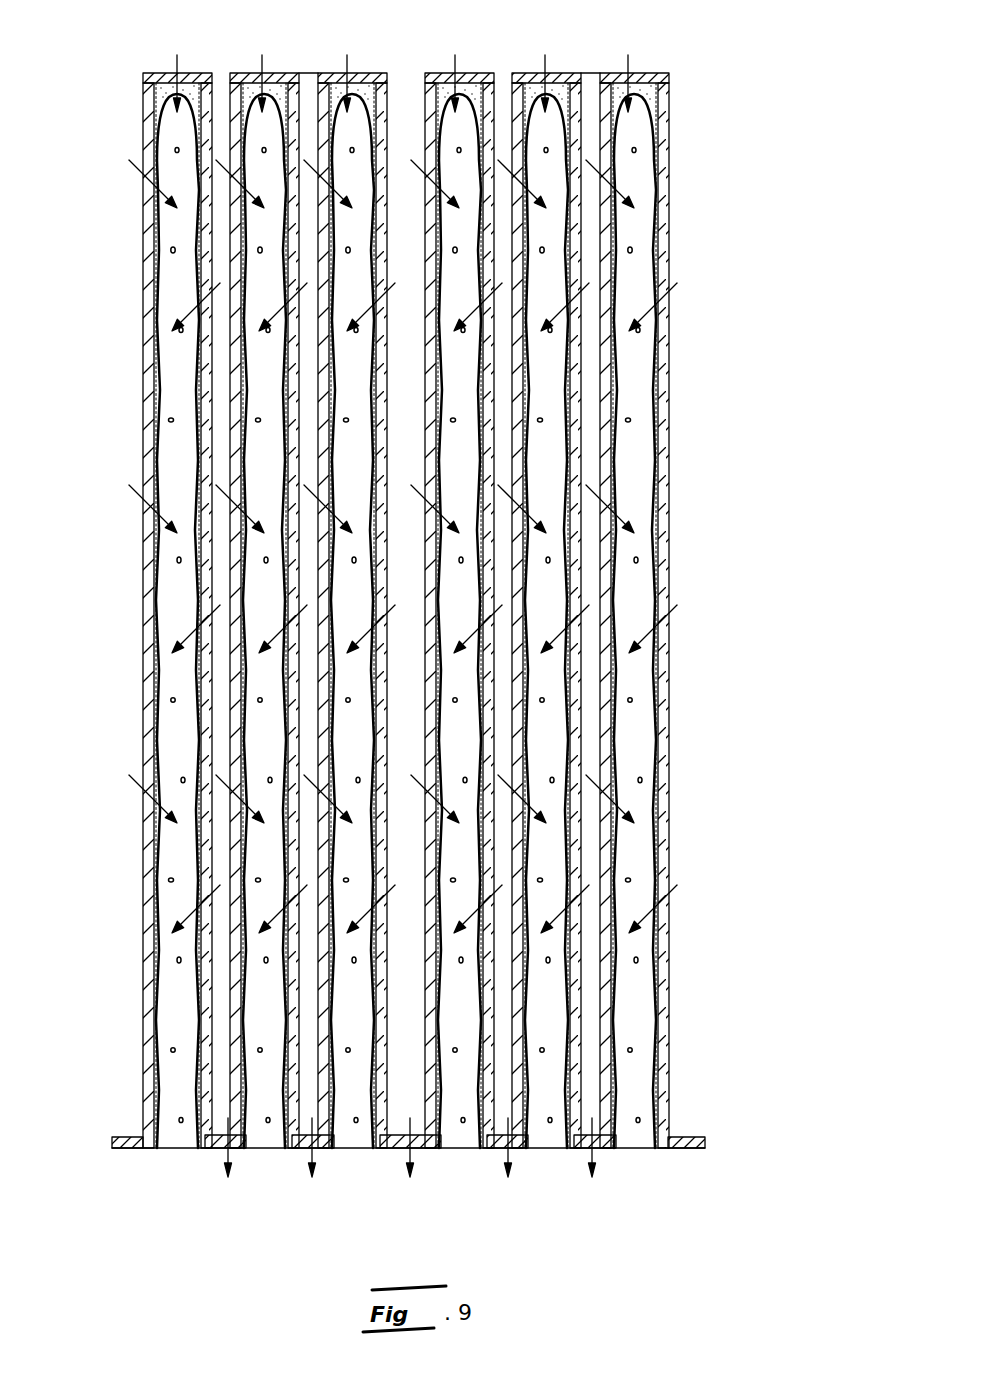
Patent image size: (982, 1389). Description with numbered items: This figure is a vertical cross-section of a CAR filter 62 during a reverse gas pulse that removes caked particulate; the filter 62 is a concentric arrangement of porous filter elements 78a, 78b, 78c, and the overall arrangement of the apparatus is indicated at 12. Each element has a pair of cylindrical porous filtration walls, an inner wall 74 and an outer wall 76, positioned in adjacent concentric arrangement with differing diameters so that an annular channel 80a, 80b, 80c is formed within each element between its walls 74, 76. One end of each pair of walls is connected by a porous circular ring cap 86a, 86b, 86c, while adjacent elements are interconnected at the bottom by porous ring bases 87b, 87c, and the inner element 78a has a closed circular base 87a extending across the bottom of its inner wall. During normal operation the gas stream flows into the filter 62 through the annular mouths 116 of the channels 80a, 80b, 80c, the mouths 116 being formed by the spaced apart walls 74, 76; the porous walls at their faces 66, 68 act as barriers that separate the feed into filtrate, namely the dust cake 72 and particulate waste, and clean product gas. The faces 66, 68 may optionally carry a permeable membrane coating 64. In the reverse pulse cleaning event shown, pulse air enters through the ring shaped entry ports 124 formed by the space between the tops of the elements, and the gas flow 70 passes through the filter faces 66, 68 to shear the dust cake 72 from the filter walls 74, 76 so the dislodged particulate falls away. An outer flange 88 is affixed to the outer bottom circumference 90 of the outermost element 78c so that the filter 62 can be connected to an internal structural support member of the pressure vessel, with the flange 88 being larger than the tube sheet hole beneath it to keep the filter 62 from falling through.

The filter apparatus 12 is at (186, 72).
The CAR filter 62 is at (738, 188).
The permeable membrane coating 64 is at (374, 1148).
The filter face 66 is at (338, 1052).
The filter face 68 is at (378, 1085).
The gas flow 70 is at (352, 62).
The dust cake 72 is at (373, 402).
The inner wall 74 is at (205, 1148).
The outer wall 76 is at (160, 1038).
The central annular element 78a is at (440, 72).
The porous filter element 78b is at (275, 72).
The outermost element 78c is at (163, 72).
The annular channel 80a is at (452, 1150).
The annular channel 80b is at (272, 1148).
The annular channel 80c is at (168, 1148).
The ring cap 86a is at (323, 60).
The ring cap 86b is at (235, 60).
The ring cap 86c is at (152, 76).
The circular base 87a is at (395, 1152).
The ring base 87b is at (320, 1148).
The ring base 87c is at (217, 1148).
The outer flange 88 is at (113, 1138).
The outer bottom circumference 90 is at (145, 1132).
The annular mouth 116 is at (176, 1148).
The ring shaped entry port 124 is at (295, 72).